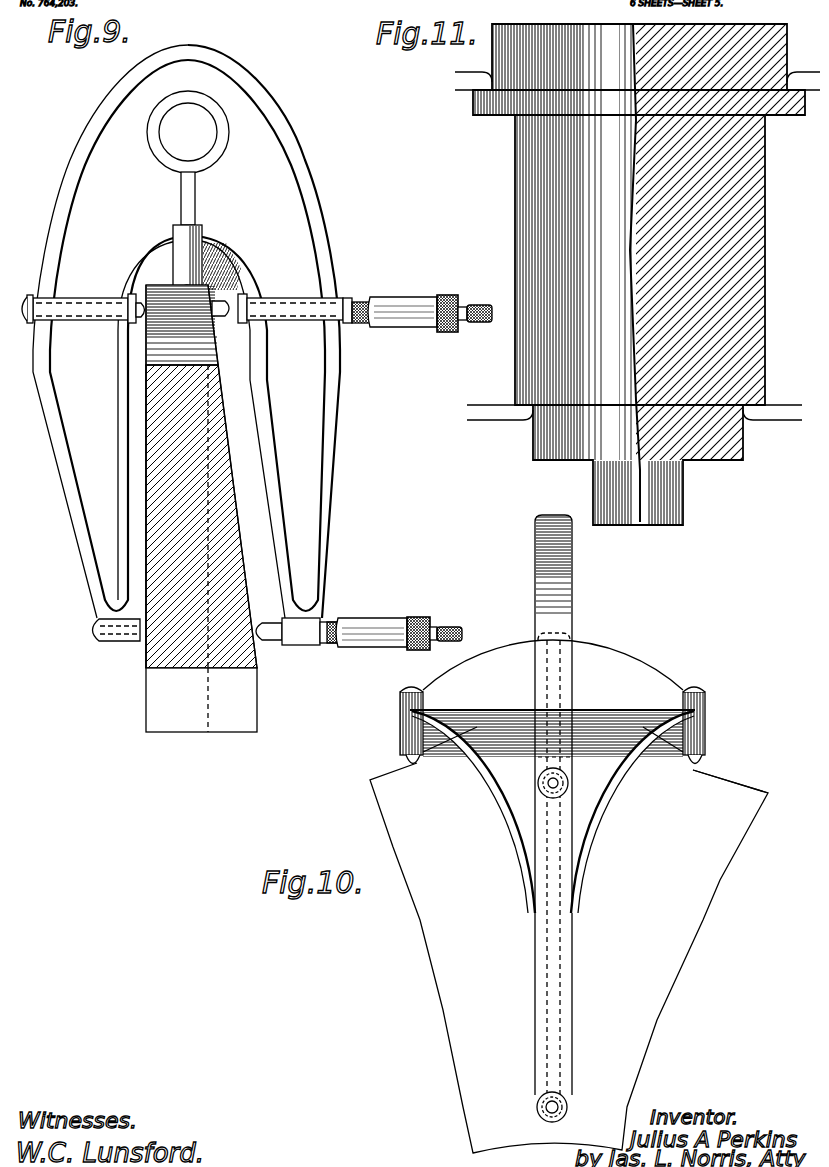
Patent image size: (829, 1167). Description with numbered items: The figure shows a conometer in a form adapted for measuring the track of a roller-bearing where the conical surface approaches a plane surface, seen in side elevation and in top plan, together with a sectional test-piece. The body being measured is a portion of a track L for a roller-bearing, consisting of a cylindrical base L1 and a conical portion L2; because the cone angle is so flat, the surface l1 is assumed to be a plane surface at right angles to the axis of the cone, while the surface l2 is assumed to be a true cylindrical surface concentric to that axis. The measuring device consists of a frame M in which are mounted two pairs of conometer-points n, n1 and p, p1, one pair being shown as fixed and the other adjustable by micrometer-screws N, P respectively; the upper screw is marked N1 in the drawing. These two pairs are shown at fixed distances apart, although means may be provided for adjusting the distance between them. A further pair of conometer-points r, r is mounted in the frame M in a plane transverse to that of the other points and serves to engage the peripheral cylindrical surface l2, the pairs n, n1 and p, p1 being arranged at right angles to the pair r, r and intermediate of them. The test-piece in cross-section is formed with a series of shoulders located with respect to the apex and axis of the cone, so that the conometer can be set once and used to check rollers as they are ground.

In FIG. 9, the frame M is at (240, 107).
In FIG. 10, the frame M is at (633, 713).
In FIG. 9, the conometer-points r is at (186, 288).
In FIG. 10, the conometer-points r is at (407, 762).
In FIG. 9, the conometer-point n is at (140, 300).
In FIG. 9, the conometer-point n1 is at (230, 303).
In FIG. 9, the cylindrical base L1 is at (187, 330).
In FIG. 9, the conical portion L2 is at (237, 503).
In FIG. 10, the conical portion L2 is at (680, 902).
In FIG. 9, the plane surface l1 is at (145, 515).
In FIG. 10, the cylindrical surface l2 is at (730, 781).
In FIG. 9, the track for a roller-bearing L is at (148, 660).
In FIG. 9, the adjusting screw N1 is at (440, 297).
In FIG. 10, the micrometer-screw N is at (573, 795).
In FIG. 9, the micrometer-screw P is at (417, 617).
In FIG. 10, the micrometer-screw P is at (540, 1102).
In FIG. 9, the conometer-point p is at (137, 642).
In FIG. 9, the conometer-point p1 is at (263, 623).